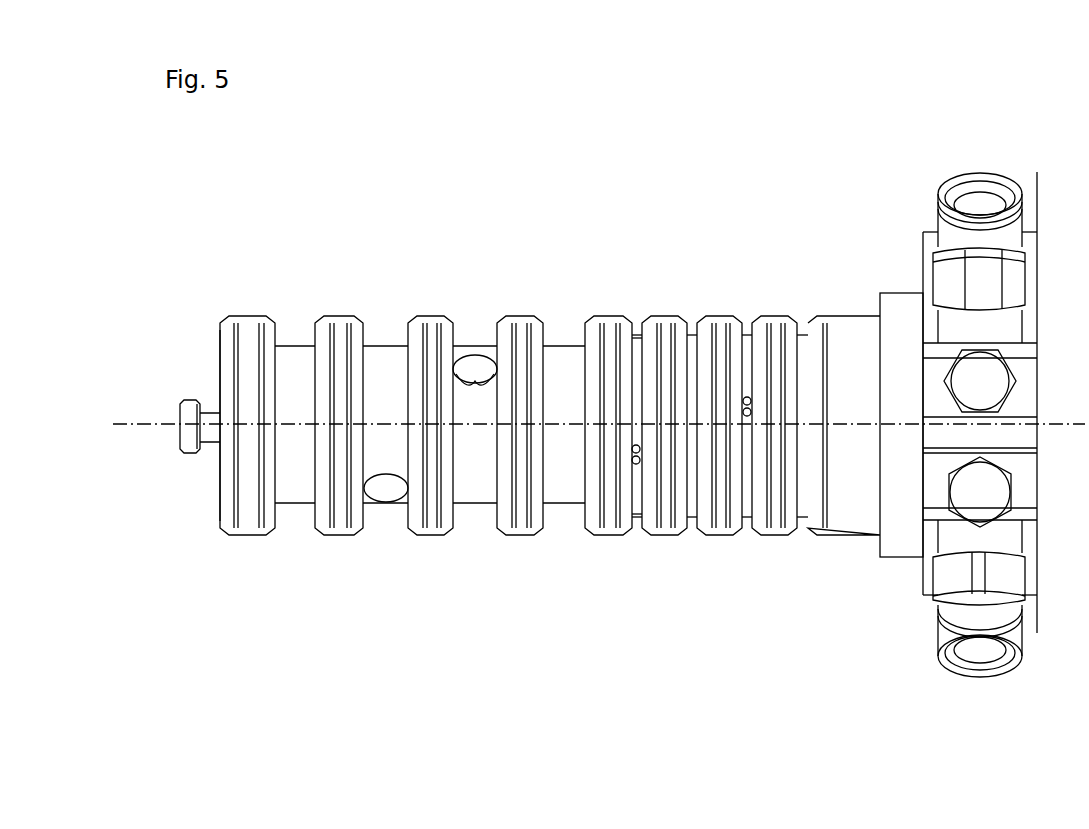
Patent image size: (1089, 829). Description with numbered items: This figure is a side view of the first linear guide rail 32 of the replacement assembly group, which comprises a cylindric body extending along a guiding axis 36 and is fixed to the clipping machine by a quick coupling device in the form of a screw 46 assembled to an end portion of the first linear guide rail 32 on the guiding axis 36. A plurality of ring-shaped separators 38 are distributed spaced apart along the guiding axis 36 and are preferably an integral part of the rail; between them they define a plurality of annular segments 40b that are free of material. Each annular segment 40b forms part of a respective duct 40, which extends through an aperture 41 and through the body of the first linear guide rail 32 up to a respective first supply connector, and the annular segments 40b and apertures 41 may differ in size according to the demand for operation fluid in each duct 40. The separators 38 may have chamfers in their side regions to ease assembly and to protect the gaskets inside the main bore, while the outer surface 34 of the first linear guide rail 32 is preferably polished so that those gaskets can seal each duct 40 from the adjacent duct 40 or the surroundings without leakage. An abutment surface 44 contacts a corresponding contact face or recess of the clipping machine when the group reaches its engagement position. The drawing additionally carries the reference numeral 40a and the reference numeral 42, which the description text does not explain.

The first linear guide rail 32 is at (437, 662).
The outer surface 34 is at (562, 505).
The guiding axis 36 is at (163, 423).
The ring-shaped separators 38 is at (250, 505).
The duct 40 is at (480, 307).
The groove 40a is at (635, 518).
The annular segment 40b is at (468, 512).
The aperture 41 is at (477, 362).
The connection fittings 42 is at (978, 213).
The abutment surface 44 is at (878, 305).
The screw 46 is at (195, 417).